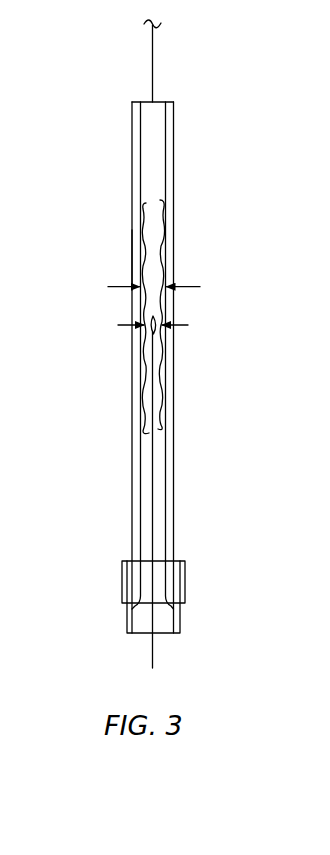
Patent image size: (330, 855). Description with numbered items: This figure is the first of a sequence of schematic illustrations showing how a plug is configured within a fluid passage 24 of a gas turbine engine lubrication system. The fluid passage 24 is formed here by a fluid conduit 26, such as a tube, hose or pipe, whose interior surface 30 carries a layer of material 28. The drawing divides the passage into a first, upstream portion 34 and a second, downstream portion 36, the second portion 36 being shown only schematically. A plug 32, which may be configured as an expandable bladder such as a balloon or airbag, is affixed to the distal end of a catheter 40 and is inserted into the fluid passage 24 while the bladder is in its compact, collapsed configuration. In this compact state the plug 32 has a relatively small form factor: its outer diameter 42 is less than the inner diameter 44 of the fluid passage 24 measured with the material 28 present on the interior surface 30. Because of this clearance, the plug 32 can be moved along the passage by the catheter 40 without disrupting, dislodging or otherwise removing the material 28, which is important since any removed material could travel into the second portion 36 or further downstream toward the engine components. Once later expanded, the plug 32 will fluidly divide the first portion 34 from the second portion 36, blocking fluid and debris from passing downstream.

The fluid passage 24 is at (152, 343).
The fluid conduit 26 is at (137, 460).
The material 28 is at (169, 301).
The interior surface 30 is at (142, 477).
The plug 32 is at (139, 322).
The first portion 34 is at (129, 257).
The second portion 36 is at (148, 58).
The catheter 40 is at (152, 618).
The outer diameter 42 is at (177, 327).
The inner diameter 44 is at (192, 286).